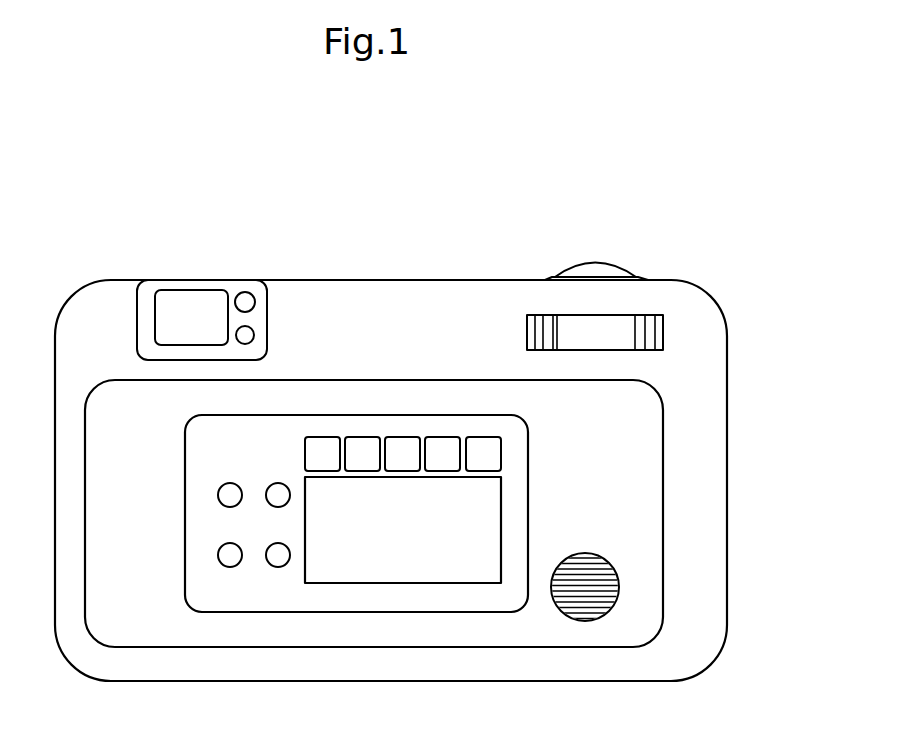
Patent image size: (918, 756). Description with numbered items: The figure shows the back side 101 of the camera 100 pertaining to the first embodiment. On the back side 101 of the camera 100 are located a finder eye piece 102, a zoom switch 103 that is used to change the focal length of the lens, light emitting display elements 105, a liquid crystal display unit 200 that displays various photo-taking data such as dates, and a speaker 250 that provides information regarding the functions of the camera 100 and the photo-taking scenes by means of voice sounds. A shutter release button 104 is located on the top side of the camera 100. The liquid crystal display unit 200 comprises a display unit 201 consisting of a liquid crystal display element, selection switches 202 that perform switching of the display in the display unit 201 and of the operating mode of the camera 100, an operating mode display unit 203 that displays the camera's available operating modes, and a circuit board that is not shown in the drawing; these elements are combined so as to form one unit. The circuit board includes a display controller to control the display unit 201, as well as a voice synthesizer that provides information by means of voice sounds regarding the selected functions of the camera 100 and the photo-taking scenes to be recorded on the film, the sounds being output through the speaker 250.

The camera 100 is at (466, 258).
The back side 101 is at (367, 310).
The finder eye piece 102 is at (192, 305).
The zoom switch 103 is at (590, 333).
The shutter release button 104 is at (590, 267).
The light emitting display elements 105 is at (248, 300).
The liquid crystal display unit 200 is at (493, 626).
The display unit 201 is at (447, 553).
The selection switches 202 is at (280, 553).
The operating mode display unit 203 is at (327, 460).
The speaker 250 is at (585, 621).